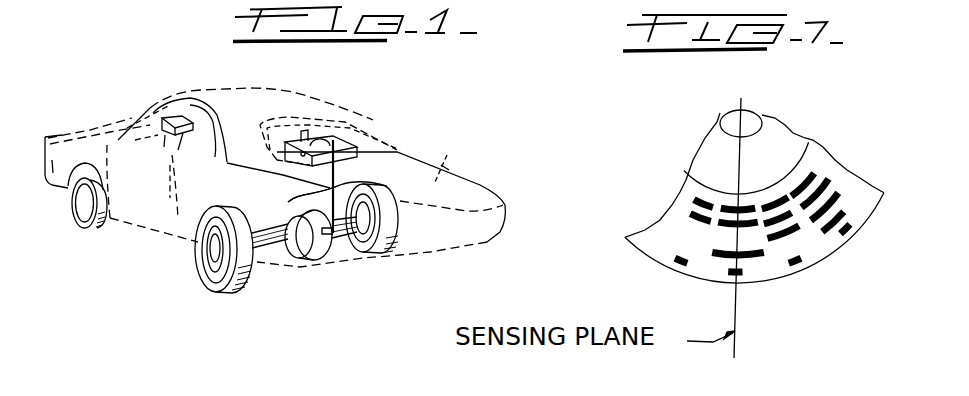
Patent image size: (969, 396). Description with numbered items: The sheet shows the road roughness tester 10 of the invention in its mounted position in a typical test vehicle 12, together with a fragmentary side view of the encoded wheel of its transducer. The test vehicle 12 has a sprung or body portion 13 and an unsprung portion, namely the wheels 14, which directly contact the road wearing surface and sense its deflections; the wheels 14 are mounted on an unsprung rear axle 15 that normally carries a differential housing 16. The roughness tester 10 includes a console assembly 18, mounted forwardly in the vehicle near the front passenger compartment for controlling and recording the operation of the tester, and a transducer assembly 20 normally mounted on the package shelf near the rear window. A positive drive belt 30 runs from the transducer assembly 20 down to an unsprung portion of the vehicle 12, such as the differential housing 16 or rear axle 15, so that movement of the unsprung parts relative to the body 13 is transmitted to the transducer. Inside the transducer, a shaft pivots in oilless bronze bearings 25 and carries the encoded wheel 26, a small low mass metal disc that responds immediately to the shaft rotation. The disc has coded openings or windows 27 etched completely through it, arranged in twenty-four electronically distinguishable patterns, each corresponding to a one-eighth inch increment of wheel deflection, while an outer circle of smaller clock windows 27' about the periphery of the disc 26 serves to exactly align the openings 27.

In FIG. 1, the roughness tester 10 is at (338, 128).
In FIG. 1, the test vehicle 12 is at (340, 93).
In FIG. 1, the sprung or body portion 13 is at (454, 152).
In FIG. 1, the wheels 14 is at (217, 272).
In FIG. 1, the unsprung rear axle 15 is at (268, 238).
In FIG. 1, the differential housing 16 is at (315, 247).
In FIG. 1, the console assembly 18 is at (163, 147).
In FIG. 1, the transducer assembly 20 is at (378, 168).
In FIG. 7, the oilless bronze bearings 25 is at (752, 122).
In FIG. 7, the encoded wheel 26 is at (848, 242).
In FIG. 7, the coded openings or windows 27 is at (738, 202).
In FIG. 7, the clock windows 27' is at (707, 277).
In FIG. 1, the positive drive belt 30 is at (296, 198).